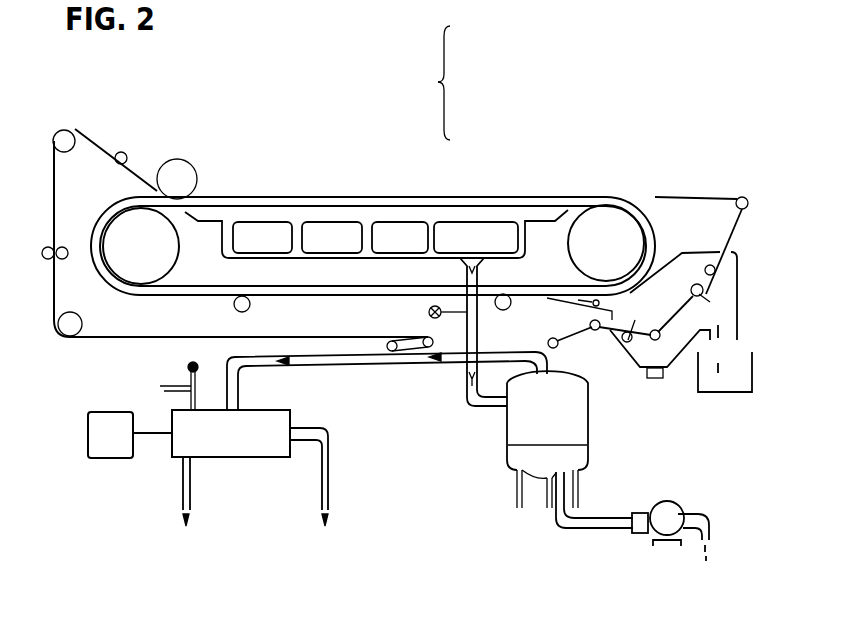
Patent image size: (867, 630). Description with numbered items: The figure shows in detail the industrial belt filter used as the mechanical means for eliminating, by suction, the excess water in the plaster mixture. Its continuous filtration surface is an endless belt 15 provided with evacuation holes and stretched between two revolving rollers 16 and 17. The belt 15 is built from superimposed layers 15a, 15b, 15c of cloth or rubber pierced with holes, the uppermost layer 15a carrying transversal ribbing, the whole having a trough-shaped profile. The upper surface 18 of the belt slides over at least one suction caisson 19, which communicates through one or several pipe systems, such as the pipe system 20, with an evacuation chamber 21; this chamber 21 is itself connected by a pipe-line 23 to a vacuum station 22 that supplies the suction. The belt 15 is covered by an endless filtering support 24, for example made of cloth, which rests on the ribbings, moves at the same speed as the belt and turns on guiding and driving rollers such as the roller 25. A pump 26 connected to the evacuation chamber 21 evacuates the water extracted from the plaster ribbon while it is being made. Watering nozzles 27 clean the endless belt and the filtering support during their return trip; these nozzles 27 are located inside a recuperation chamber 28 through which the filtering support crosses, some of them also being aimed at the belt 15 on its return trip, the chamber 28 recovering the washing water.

The endless belt 15 is at (402, 203).
The uppermost layer 15a is at (472, 54).
The superimposed layer 15b is at (472, 84).
The superimposed layer 15c is at (474, 120).
The revolving roller 16 is at (141, 246).
The revolving roller 17 is at (606, 243).
The upper surface 18 is at (580, 198).
The suction caisson 19 is at (280, 217).
The drain pipe 20 is at (477, 406).
The evacuation chamber 21 is at (547, 439).
The vacuum station 22 is at (208, 444).
The pipe-line 23 is at (388, 363).
The endless filtering support 24 is at (142, 168).
The guiding and driving roller 25 is at (65, 126).
The pump 26 is at (668, 508).
The watering nozzles 27 is at (625, 357).
The recuperation chamber 28 is at (682, 278).